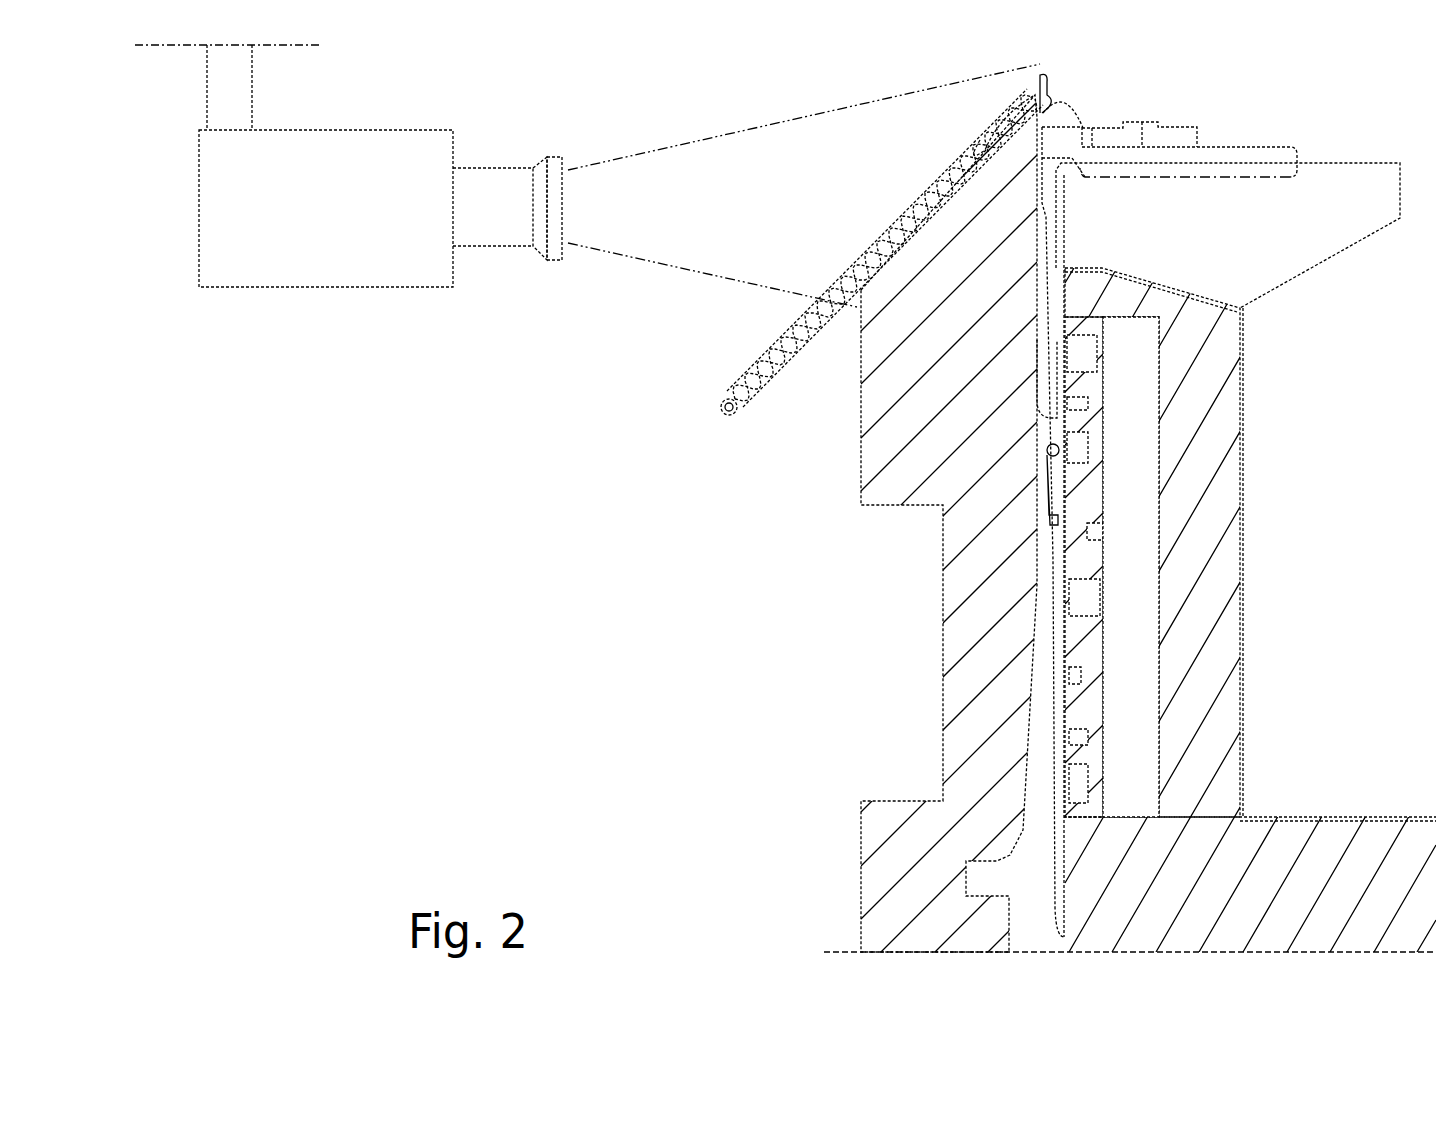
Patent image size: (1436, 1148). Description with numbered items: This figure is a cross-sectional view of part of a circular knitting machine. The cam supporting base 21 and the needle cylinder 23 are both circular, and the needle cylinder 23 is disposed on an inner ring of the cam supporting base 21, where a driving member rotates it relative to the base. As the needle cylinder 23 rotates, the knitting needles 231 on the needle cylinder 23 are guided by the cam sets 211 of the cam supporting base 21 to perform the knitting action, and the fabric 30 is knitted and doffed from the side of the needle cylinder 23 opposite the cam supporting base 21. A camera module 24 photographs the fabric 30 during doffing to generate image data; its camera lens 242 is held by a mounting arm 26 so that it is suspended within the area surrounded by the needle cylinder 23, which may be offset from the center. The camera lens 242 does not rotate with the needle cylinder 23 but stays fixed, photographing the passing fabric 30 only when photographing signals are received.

The cam supporting base 21 is at (1215, 430).
The cam sets 211 is at (1107, 558).
The needle cylinder 23 is at (870, 460).
The knitting needles 231 is at (1042, 78).
The camera module 24 is at (272, 298).
The camera lens 242 is at (477, 233).
The mounting arm 26 is at (207, 78).
The fabric 30 is at (727, 408).